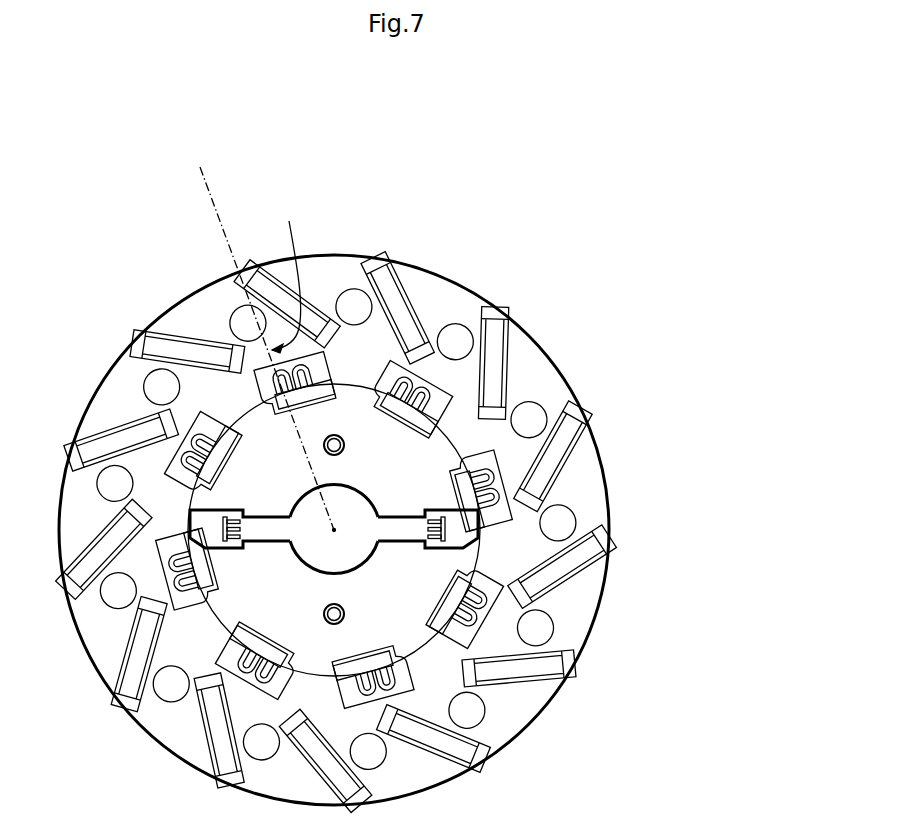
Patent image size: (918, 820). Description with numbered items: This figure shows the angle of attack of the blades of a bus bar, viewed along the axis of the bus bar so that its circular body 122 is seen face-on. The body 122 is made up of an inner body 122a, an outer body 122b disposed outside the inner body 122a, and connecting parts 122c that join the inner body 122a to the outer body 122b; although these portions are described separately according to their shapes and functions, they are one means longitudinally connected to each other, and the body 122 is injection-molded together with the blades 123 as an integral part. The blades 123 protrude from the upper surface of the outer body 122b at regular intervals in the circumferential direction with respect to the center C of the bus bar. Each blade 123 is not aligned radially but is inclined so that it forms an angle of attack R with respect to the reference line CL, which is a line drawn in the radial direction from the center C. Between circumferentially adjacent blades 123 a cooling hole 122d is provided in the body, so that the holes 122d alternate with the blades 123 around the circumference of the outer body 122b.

The body 122 is at (718, 563).
The inner body 122a is at (476, 615).
The outer body 122b is at (565, 618).
The connecting parts 122c is at (526, 540).
The cooling hole 122d is at (447, 320).
The blades 123 is at (195, 348).
The center C is at (334, 530).
The reference line CL is at (197, 157).
The angle of attack R is at (286, 274).